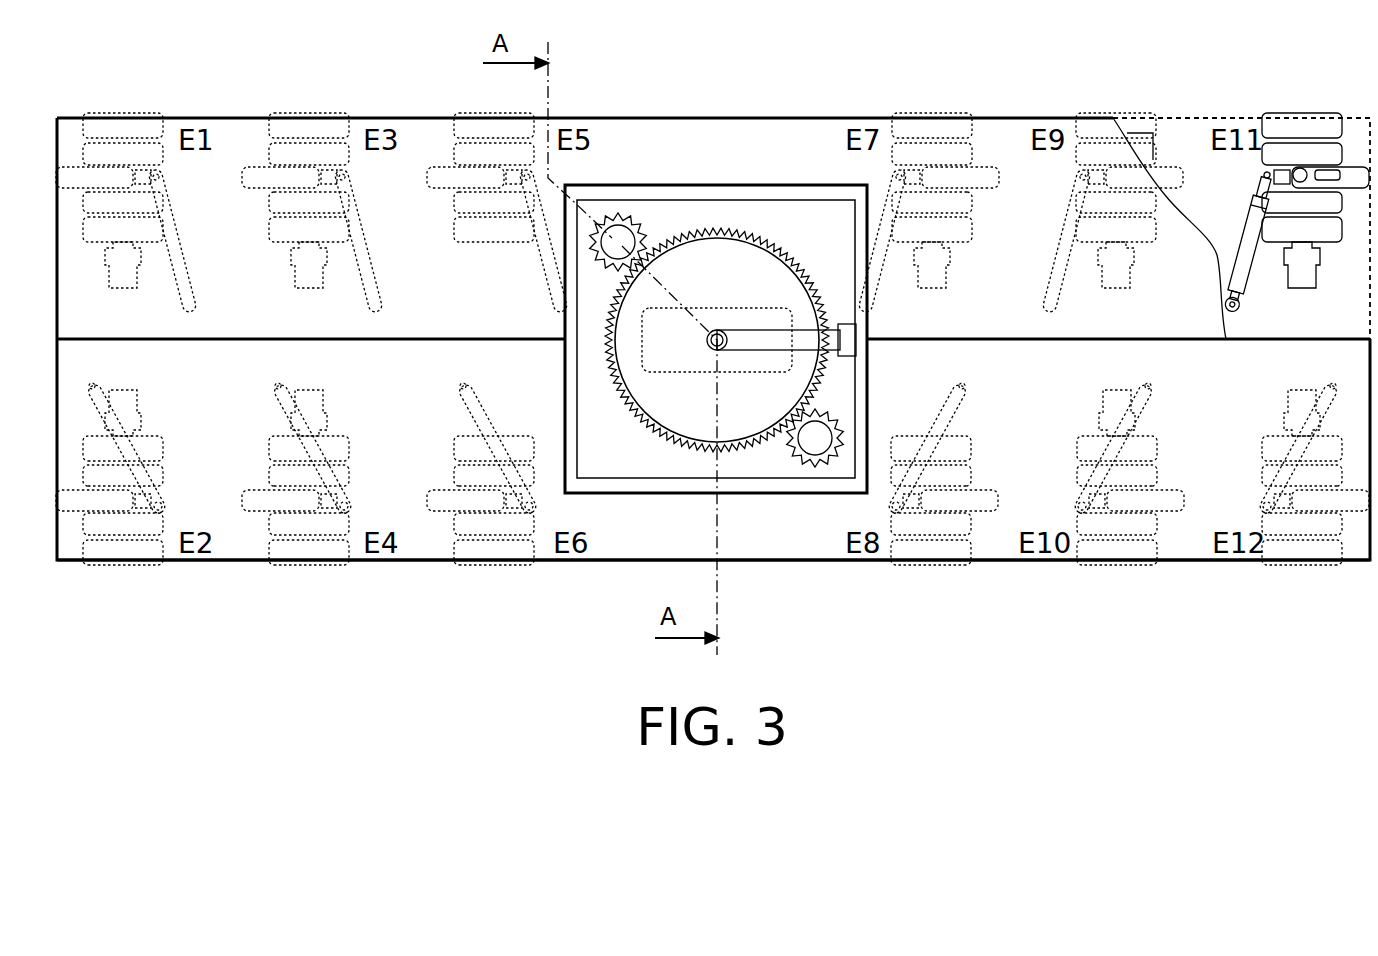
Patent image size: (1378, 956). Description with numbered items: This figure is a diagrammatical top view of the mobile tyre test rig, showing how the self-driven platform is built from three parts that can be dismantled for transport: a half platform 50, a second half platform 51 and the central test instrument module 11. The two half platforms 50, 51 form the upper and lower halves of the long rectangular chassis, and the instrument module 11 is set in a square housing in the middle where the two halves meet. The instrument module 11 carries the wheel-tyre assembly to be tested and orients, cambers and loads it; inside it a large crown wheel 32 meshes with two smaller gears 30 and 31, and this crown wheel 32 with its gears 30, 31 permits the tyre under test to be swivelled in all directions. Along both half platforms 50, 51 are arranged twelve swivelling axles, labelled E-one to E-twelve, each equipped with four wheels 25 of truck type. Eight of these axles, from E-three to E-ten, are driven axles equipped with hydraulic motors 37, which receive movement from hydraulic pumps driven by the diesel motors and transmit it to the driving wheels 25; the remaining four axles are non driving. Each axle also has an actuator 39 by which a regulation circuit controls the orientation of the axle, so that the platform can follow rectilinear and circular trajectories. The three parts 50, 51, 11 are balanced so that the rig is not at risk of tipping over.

The test instrument module 11 is at (820, 186).
The wheels 25 is at (1310, 110).
The gear 30 is at (636, 218).
The gear 31 is at (783, 447).
The crown wheel 32 is at (688, 449).
The hydraulic motor 37 is at (118, 282).
The actuator 39 is at (369, 278).
The half platform 50 is at (585, 118).
The half platform 51 is at (800, 560).